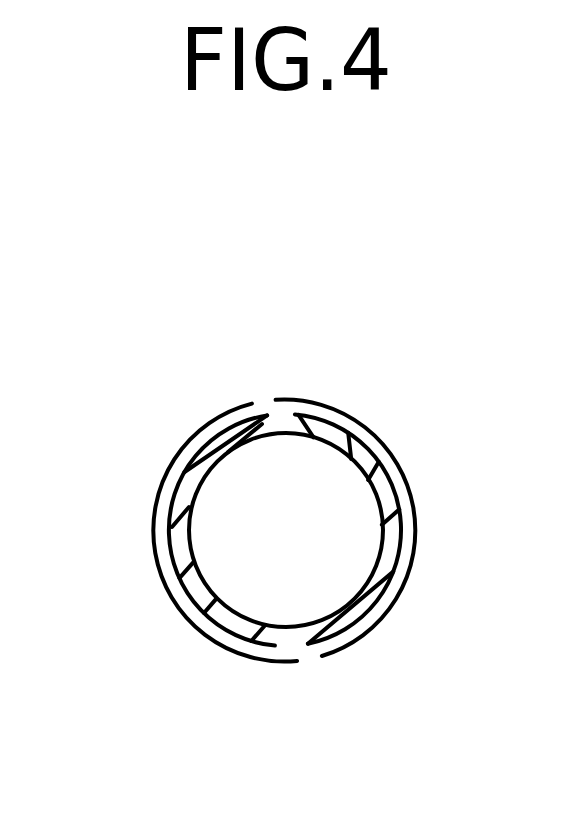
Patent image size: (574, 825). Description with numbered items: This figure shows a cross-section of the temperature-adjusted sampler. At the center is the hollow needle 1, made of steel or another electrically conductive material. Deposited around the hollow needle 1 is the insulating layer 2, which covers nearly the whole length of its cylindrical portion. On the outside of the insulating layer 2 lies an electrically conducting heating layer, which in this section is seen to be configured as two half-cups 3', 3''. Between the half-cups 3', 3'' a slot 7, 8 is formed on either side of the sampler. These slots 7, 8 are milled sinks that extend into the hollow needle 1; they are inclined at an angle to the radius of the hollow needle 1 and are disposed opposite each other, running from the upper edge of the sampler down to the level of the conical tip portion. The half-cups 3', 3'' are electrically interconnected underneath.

The hollow needle 1 is at (402, 506).
The insulating layer 2 is at (286, 524).
The half-cup 3' is at (163, 533).
The half-cup 3'' is at (410, 528).
The slot 7 is at (273, 414).
The slot 8 is at (295, 651).